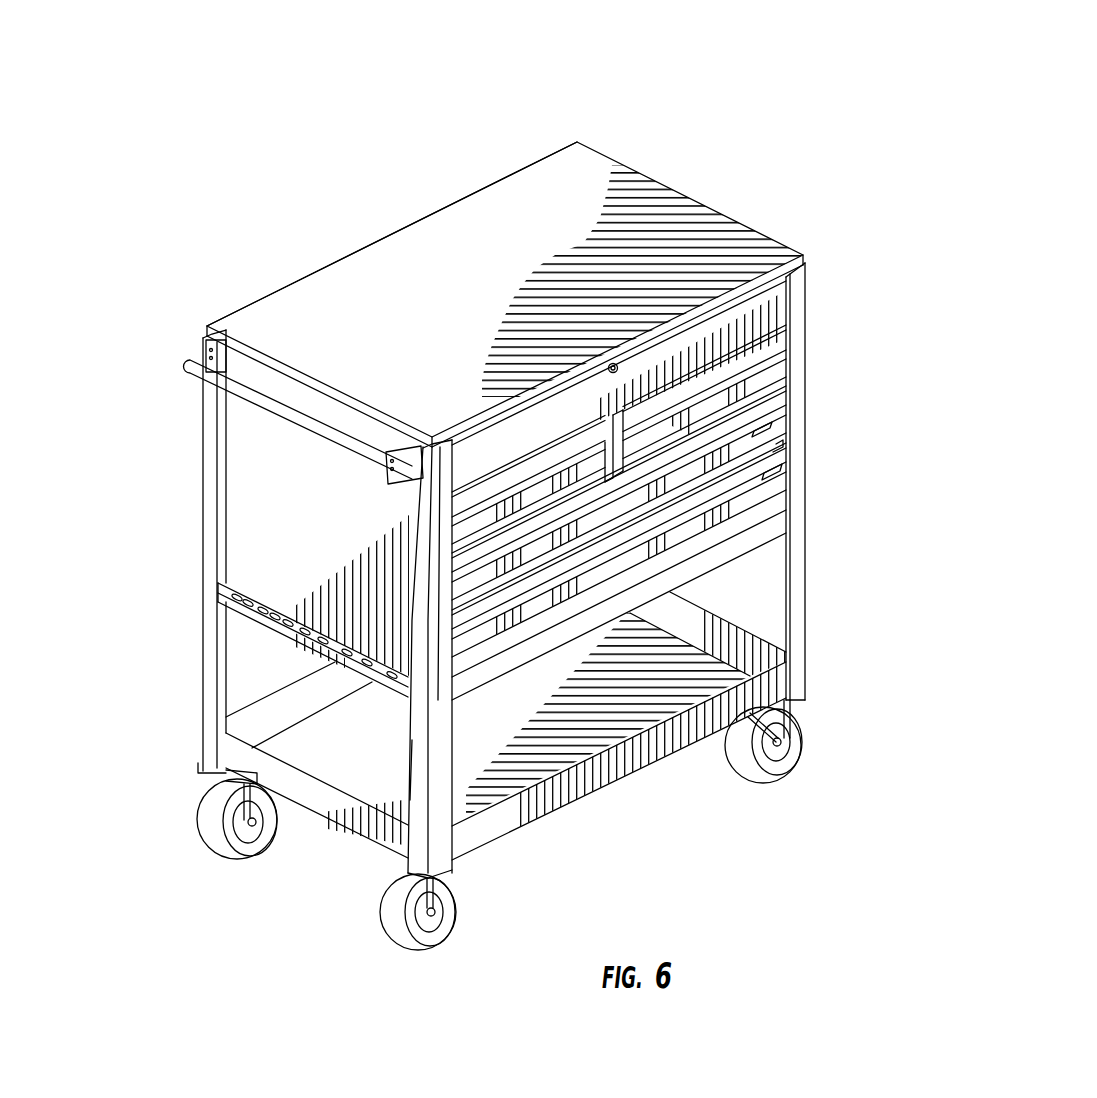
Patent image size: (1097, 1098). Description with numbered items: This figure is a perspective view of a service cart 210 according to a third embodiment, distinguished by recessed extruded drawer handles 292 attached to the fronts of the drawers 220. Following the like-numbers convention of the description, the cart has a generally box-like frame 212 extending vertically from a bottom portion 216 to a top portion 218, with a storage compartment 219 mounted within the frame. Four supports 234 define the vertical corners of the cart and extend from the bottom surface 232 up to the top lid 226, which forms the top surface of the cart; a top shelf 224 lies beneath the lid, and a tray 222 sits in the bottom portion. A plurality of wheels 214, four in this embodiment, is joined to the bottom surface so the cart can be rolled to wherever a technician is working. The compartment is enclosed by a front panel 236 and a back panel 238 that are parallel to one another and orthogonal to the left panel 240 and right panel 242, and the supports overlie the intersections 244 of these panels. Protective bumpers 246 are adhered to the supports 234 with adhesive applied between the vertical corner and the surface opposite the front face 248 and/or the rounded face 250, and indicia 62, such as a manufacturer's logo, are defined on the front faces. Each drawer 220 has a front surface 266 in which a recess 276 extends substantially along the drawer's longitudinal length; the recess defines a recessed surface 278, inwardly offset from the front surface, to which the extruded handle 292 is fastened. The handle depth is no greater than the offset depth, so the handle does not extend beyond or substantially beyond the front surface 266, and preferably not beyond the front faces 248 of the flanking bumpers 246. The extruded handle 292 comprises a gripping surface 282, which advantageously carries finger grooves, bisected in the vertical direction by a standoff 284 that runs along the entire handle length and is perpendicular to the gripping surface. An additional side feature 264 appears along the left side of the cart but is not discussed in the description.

The service cart 210 is at (694, 117).
The caster mount 212 is at (200, 792).
The wheel 214 is at (743, 755).
The shelf side rail 216 is at (258, 765).
The rear corner post 218 is at (258, 425).
The post channel 219 is at (248, 472).
The drawer 220 is at (766, 440).
The bottom shelf 222 is at (516, 723).
The lid 224 is at (554, 188).
The top surface 226 is at (459, 280).
The shelf front edge 232 is at (600, 800).
The support 234 is at (430, 438).
The front frame 236 is at (512, 455).
The lid rear edge 238 is at (245, 308).
The side panel 240 is at (311, 505).
The lock 242 is at (620, 456).
The post cap 244 is at (432, 438).
The protective bumper 246 is at (797, 656).
The front face 248 is at (797, 664).
The rounded face 250 is at (417, 764).
The handle 264 is at (190, 365).
The front surface 266 is at (762, 392).
The recess 276 is at (772, 418).
The recessed surface 278 is at (770, 362).
The gripping surface 282 is at (765, 500).
The standoff 284 is at (624, 450).
The recessed extruded drawer handle 292 is at (700, 535).
The indicia 62 is at (796, 468).